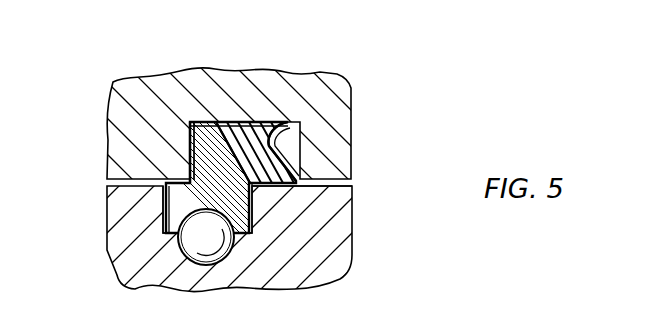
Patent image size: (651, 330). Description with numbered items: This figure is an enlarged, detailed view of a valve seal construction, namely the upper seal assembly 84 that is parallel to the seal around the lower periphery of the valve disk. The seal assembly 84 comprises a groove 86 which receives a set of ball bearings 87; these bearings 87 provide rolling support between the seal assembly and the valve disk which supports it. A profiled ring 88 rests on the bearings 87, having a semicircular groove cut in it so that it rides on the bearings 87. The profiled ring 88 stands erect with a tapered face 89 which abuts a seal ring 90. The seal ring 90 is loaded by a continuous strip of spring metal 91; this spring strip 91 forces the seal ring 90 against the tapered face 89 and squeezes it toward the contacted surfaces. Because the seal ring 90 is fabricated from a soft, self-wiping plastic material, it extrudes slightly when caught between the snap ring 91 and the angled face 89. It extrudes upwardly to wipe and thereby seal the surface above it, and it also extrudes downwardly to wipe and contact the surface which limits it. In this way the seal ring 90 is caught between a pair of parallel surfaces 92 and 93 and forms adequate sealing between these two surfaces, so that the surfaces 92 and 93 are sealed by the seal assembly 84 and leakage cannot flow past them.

The upper seal 84 is at (357, 153).
The groove 86 is at (236, 257).
The ball bearings 87 is at (181, 249).
The profiled ring 88 is at (168, 204).
The tapered face 89 is at (235, 130).
The seal ring 90 is at (238, 132).
The spring strip 91 is at (301, 134).
The parallel surface 92 is at (268, 124).
The parallel surface 93 is at (338, 187).